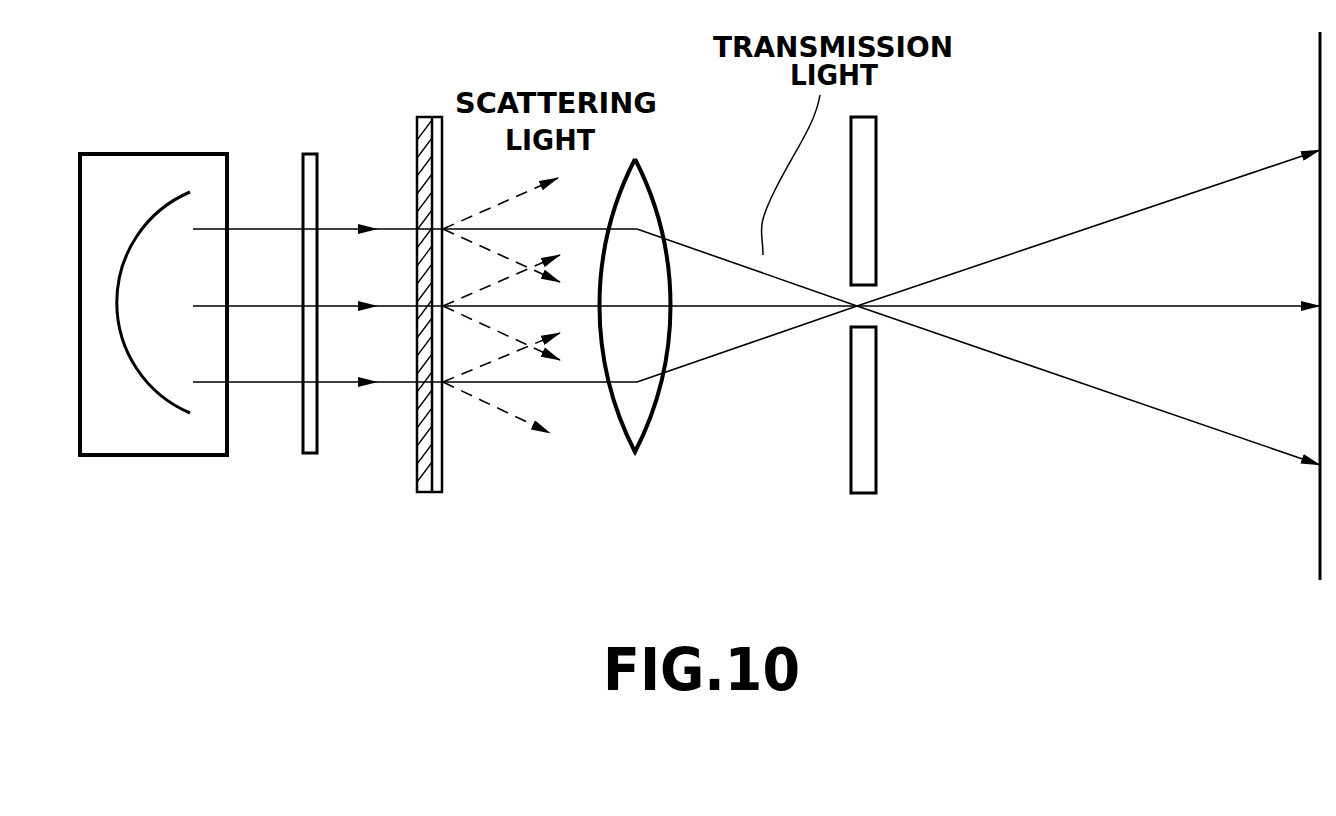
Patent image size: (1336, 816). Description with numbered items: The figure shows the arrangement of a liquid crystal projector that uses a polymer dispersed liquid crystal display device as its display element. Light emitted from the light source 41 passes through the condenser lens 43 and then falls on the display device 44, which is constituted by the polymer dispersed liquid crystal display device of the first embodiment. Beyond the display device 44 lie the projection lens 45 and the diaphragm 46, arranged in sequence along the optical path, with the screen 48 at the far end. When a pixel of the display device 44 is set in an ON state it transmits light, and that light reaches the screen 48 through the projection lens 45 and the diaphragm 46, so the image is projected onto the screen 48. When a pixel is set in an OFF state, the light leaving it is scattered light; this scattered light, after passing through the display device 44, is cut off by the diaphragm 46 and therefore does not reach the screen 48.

The light source 41 is at (172, 445).
The condenser lens 43 is at (305, 455).
The display device 44 is at (435, 495).
The projection lens 45 is at (637, 455).
The diaphragm 46 is at (866, 495).
The screen 48 is at (1315, 506).